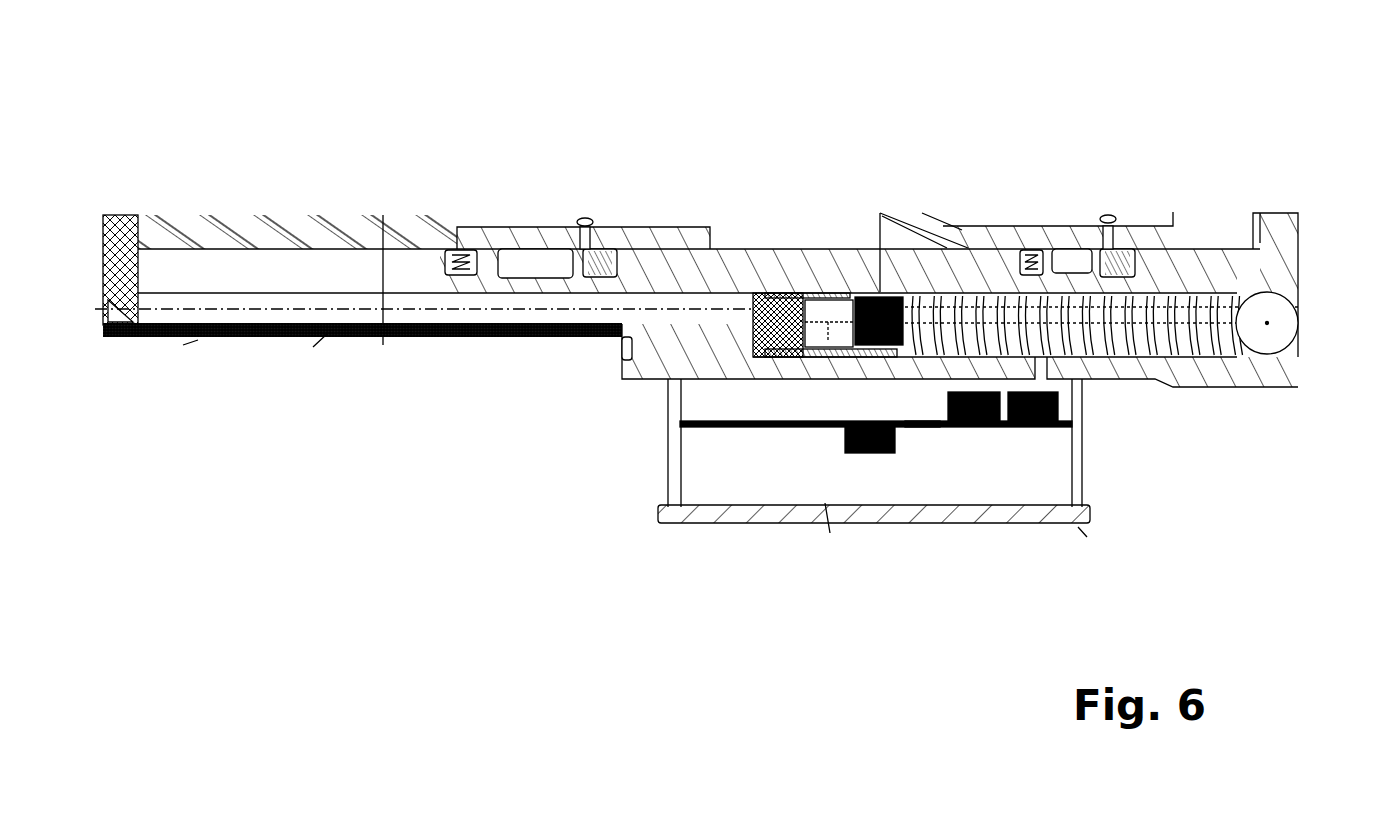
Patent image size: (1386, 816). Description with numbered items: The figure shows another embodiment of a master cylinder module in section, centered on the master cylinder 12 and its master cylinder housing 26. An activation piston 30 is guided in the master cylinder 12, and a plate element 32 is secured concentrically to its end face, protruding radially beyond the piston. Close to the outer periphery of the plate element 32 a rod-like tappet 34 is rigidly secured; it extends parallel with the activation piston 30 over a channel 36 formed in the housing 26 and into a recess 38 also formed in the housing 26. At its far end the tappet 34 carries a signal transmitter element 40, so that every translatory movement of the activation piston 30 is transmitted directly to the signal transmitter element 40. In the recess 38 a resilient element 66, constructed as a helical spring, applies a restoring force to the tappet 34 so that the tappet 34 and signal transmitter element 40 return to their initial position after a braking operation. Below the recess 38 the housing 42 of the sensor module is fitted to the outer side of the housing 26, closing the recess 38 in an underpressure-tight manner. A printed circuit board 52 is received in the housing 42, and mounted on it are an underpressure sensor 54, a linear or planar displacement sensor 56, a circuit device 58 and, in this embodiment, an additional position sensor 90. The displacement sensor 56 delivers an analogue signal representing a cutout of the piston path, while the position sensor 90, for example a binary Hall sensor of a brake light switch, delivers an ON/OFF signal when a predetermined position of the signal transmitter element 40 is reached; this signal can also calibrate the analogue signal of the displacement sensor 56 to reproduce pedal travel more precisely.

The master cylinder 12 is at (1113, 183).
The master cylinder housing 26 is at (1272, 226).
The activation piston 30 is at (327, 223).
The plate element 32 is at (142, 340).
The tappet 34 is at (355, 313).
The channel 36 is at (680, 292).
The recess 38 is at (972, 300).
The signal transmitter element 40 is at (880, 250).
The housing 42 is at (1094, 491).
The printed circuit board 52 is at (792, 428).
The underpressure sensor 54 is at (1020, 427).
The displacement sensor 56 is at (920, 427).
The circuit device 58 is at (880, 453).
The resilient element 66 is at (1185, 340).
The position sensor 90 is at (975, 427).